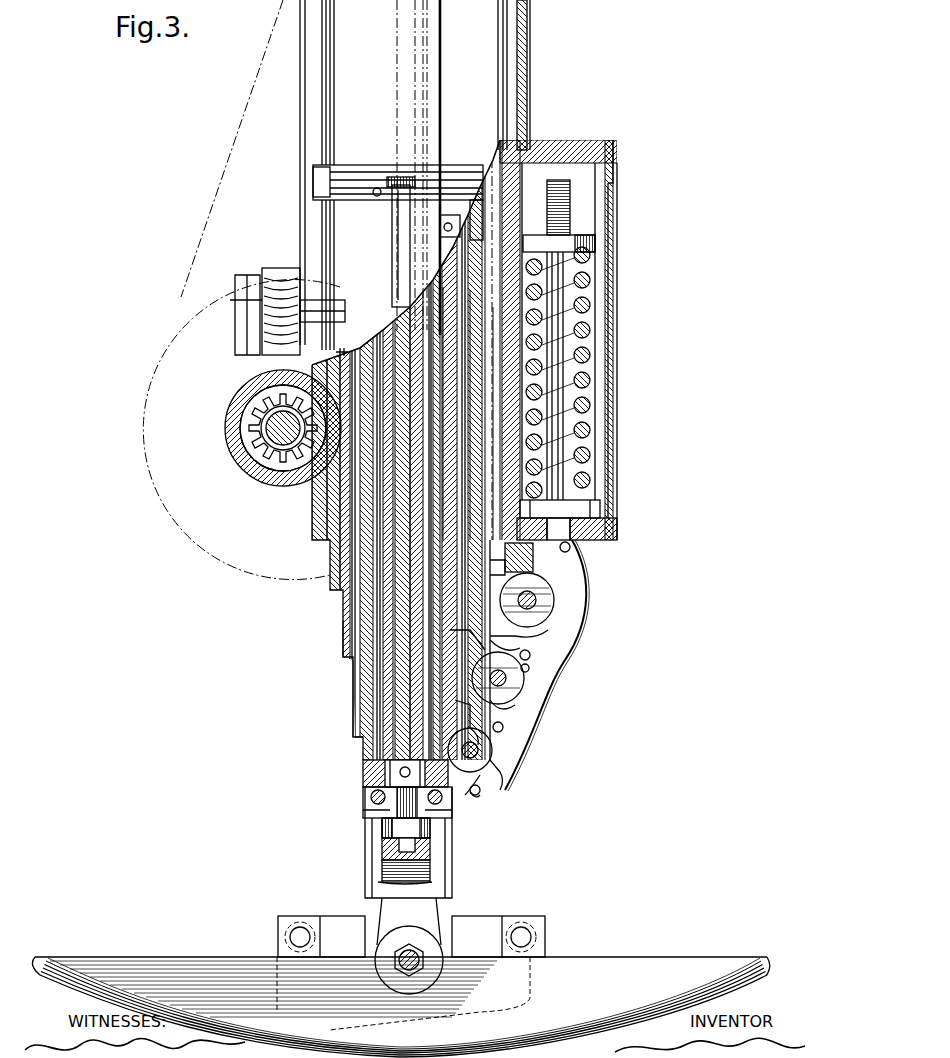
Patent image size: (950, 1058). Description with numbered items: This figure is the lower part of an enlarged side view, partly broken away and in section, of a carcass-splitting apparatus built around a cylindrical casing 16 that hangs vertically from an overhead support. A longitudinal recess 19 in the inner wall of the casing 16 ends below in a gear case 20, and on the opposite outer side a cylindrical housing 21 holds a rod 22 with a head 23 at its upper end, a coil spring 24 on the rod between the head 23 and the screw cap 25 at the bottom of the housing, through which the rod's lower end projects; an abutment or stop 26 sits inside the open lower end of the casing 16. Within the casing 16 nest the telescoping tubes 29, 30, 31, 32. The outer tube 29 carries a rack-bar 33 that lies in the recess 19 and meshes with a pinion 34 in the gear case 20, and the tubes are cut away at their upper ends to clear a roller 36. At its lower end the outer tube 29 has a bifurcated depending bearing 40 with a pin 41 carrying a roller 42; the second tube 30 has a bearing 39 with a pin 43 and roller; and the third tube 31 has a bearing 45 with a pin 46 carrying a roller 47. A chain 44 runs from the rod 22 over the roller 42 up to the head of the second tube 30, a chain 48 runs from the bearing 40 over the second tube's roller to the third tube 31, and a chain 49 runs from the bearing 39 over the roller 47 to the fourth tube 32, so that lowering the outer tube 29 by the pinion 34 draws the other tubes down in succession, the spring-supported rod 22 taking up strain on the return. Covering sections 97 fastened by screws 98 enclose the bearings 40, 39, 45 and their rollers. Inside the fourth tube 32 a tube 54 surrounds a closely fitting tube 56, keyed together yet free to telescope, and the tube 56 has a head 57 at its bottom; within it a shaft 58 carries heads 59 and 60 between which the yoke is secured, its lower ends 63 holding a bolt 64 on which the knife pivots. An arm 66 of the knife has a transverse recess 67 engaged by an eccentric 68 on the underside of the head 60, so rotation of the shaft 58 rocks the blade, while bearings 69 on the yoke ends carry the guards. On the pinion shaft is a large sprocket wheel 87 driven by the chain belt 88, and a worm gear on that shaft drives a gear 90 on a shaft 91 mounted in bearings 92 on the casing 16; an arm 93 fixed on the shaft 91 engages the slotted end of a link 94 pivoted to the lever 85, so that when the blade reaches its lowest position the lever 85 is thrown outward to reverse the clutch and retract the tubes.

The cylindrical casing 16 is at (378, 85).
The longitudinal recess 19 is at (345, 344).
The gear case 20 is at (240, 428).
The cylindrical housing 21 is at (600, 310).
The rod 22 is at (585, 360).
The head 23 is at (596, 245).
The coil spring 24 is at (590, 328).
The screw cap 25 is at (600, 518).
The abutment or stop 26 is at (585, 500).
The outer tube 29 is at (513, 453).
The second tube 30 is at (482, 435).
The third tube 31 is at (460, 413).
The fourth tube 32 is at (463, 395).
The rack-bar 33 is at (240, 376).
The pinion 34 is at (275, 468).
The roller 36 is at (245, 462).
The bifurcated bearing 39 is at (545, 698).
The bifurcated depending bearing 40 is at (552, 630).
The pin 41 is at (560, 617).
The roller 42 is at (527, 600).
The pin 43 is at (535, 715).
The chain 44 is at (493, 307).
The bifurcated bearing 45 is at (505, 772).
The pin 46 is at (485, 780).
The roller 47 is at (478, 795).
The chain or cable 48 is at (470, 290).
The chain 49 is at (443, 287).
The tube 54 is at (342, 630).
The tube 56 is at (352, 670).
The head 57 is at (352, 690).
The shaft 58 is at (362, 798).
The head 59 is at (380, 826).
The head 60 is at (385, 835).
The lower ends of the yoke 63 is at (455, 856).
The bolt 64 is at (409, 972).
The arm 66 is at (400, 977).
The transverse recess 67 is at (382, 868).
The eccentric 68 is at (382, 850).
The bearings 69 is at (411, 936).
The lever 85 is at (443, 87).
The large sprocket wheel 87 is at (148, 410).
The chain belt 88 is at (425, 115).
The gear 90 is at (283, 270).
The shaft 91 is at (345, 310).
The bearings 92 is at (243, 274).
The arm 93 is at (395, 264).
The link 94 is at (430, 195).
The covering sections 97 is at (585, 582).
The screws 98 is at (571, 548).